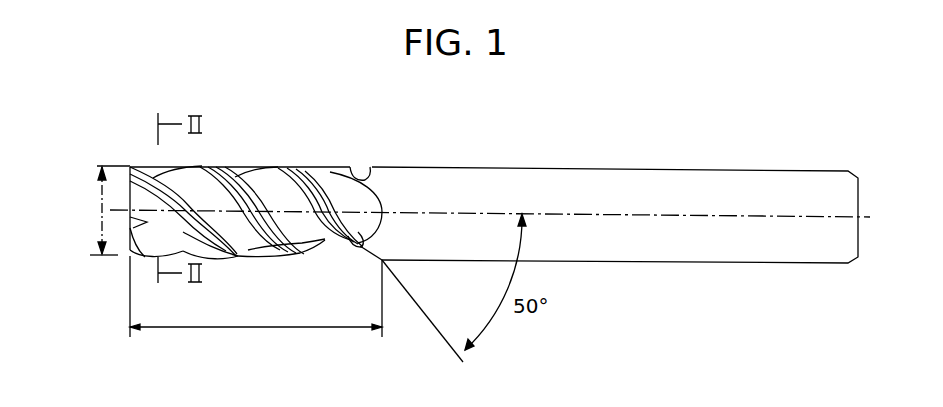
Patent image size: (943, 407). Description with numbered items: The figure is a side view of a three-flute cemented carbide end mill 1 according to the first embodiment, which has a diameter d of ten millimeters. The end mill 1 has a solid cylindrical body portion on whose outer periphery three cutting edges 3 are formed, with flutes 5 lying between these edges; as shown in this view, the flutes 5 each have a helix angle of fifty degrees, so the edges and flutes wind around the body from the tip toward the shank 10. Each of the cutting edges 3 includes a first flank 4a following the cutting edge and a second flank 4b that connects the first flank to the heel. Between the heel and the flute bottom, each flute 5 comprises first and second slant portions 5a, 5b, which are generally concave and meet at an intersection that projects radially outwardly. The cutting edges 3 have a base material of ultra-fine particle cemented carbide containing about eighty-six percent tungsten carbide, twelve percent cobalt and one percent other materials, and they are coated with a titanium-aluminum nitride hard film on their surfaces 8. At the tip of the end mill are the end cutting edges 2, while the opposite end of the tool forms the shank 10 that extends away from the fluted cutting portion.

The end mill 1 is at (720, 156).
The shank 10 is at (559, 185).
The end cutting edges 2 is at (129, 196).
The cutting edges 3 is at (262, 255).
The flutes 5 is at (315, 240).
The first slant portion 5a is at (285, 170).
The second slant portion 5b is at (258, 175).
The first flank 4a is at (325, 168).
The second flank 4b is at (305, 172).
The surfaces 8 is at (238, 328).
The diameter d is at (102, 210).